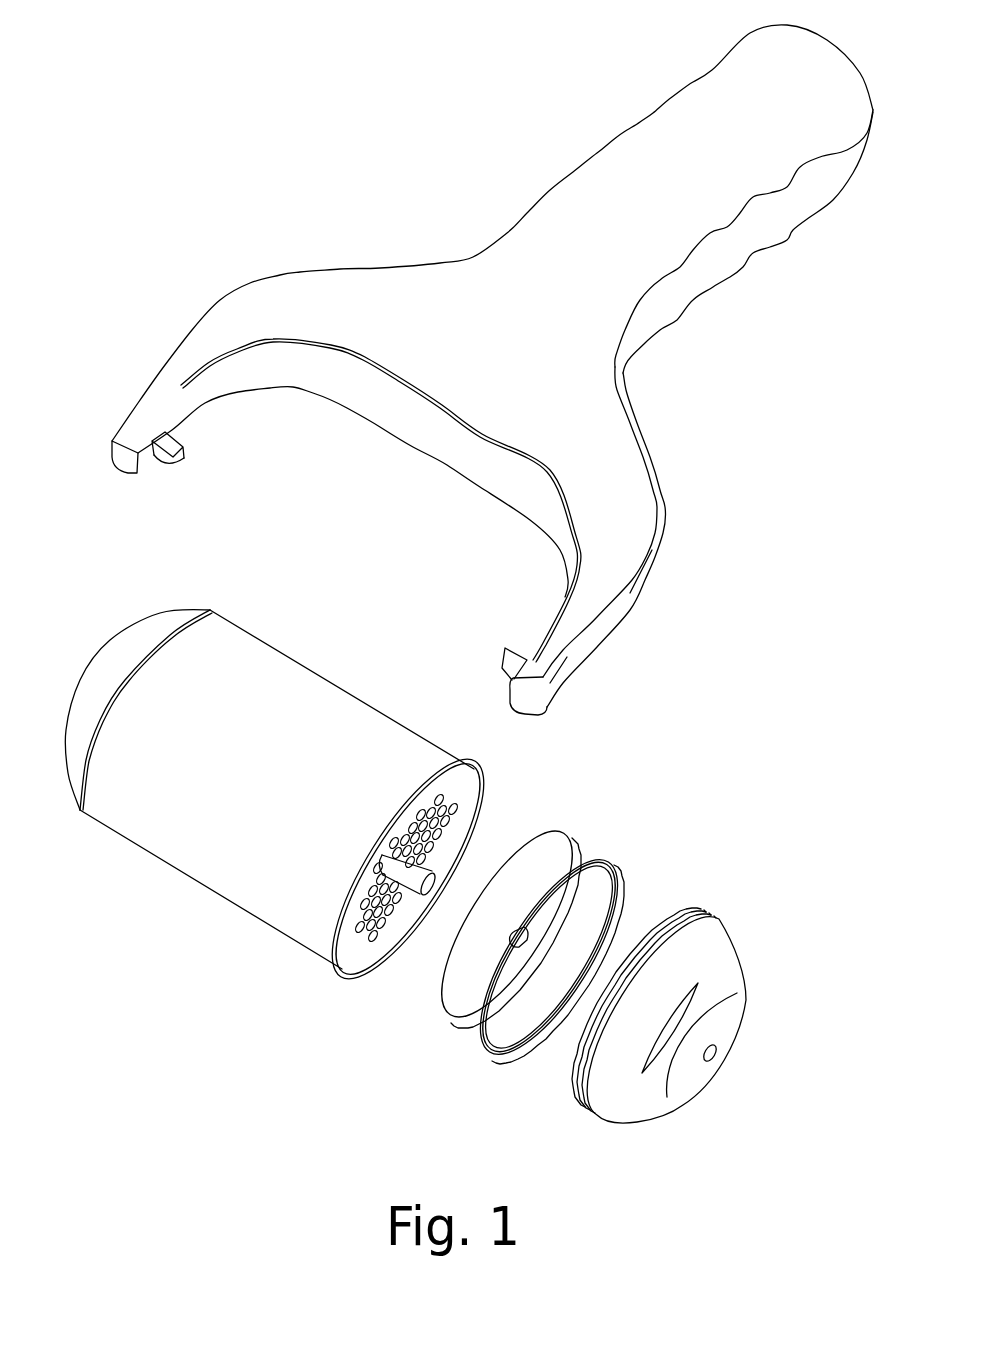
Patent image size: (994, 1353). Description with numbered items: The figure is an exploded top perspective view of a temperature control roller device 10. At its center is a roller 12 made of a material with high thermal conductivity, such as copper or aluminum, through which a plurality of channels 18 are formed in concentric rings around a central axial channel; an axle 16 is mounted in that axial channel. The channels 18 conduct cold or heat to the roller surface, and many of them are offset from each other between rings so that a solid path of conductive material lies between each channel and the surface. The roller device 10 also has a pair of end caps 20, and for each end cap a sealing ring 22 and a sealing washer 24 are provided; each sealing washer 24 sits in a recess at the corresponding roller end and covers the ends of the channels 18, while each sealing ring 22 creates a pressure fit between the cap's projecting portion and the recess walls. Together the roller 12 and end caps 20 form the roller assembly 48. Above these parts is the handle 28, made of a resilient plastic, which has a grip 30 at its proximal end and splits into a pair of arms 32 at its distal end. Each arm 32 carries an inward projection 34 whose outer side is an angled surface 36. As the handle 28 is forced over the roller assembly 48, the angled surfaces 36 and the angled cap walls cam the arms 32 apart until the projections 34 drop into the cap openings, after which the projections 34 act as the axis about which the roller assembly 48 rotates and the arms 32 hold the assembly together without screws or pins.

The temperature control roller device 10 is at (114, 148).
The roller 12 is at (290, 665).
The axle 16 is at (400, 857).
The channels 18 is at (445, 802).
The end caps 20 is at (100, 658).
The sealing ring 22 is at (618, 878).
The sealing washer 24 is at (570, 848).
The handle 28 is at (466, 182).
The grip 30 is at (657, 120).
The arms 32 is at (140, 408).
The projection 34 is at (182, 452).
The angled surface 36 is at (163, 466).
The roller assembly 48 is at (275, 1022).